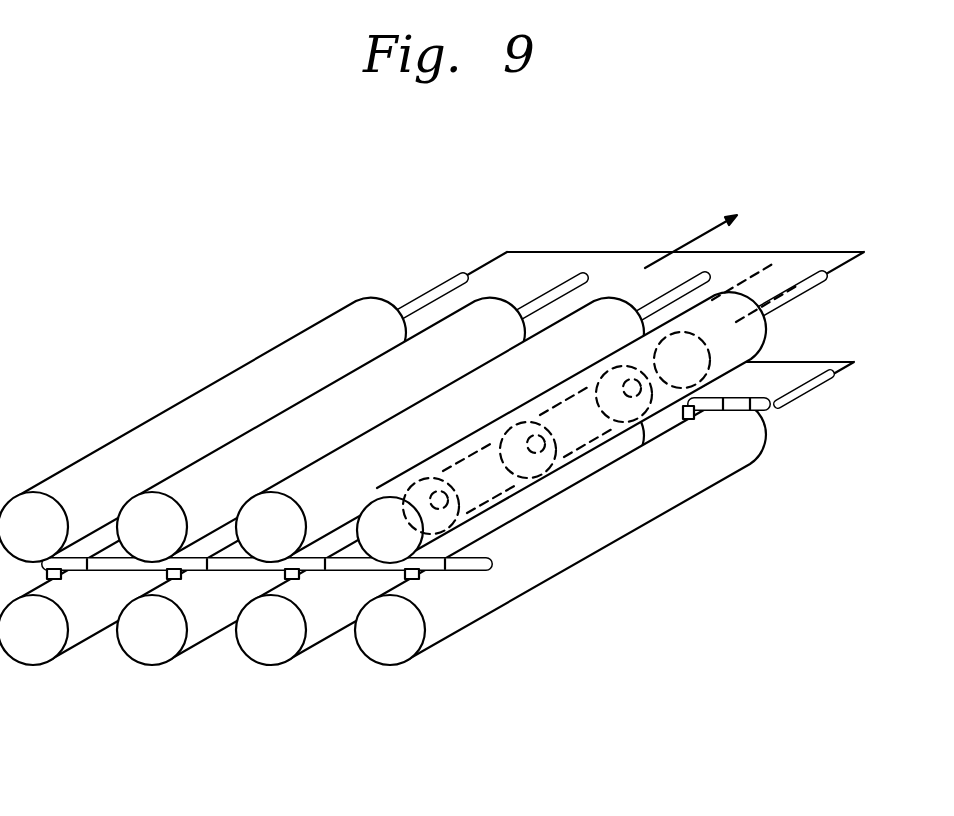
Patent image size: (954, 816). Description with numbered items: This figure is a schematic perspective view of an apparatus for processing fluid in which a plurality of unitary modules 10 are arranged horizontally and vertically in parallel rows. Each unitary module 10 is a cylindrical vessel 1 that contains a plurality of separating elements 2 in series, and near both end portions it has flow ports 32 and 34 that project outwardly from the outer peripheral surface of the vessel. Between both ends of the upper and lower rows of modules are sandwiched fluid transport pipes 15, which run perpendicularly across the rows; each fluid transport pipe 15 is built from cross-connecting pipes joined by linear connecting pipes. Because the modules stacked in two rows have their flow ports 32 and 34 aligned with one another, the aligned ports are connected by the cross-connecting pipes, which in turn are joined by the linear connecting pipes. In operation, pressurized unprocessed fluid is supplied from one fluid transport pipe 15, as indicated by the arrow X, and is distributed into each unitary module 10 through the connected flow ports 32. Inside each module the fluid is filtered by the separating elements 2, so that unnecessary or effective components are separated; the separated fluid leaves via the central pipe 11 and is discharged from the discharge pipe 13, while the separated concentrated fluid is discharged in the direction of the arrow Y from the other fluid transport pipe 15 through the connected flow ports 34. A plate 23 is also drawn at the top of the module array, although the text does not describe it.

The cylindrical vessel 1 is at (471, 548).
The separating element 2 is at (702, 420).
The unitary module 10 is at (471, 505).
The central pipe 11 is at (742, 300).
The discharge pipe 13 is at (578, 275).
The fluid transport pipe 15 is at (233, 570).
The plate 23 is at (652, 250).
The flow port 32 is at (74, 570).
The flow port 34 is at (746, 368).